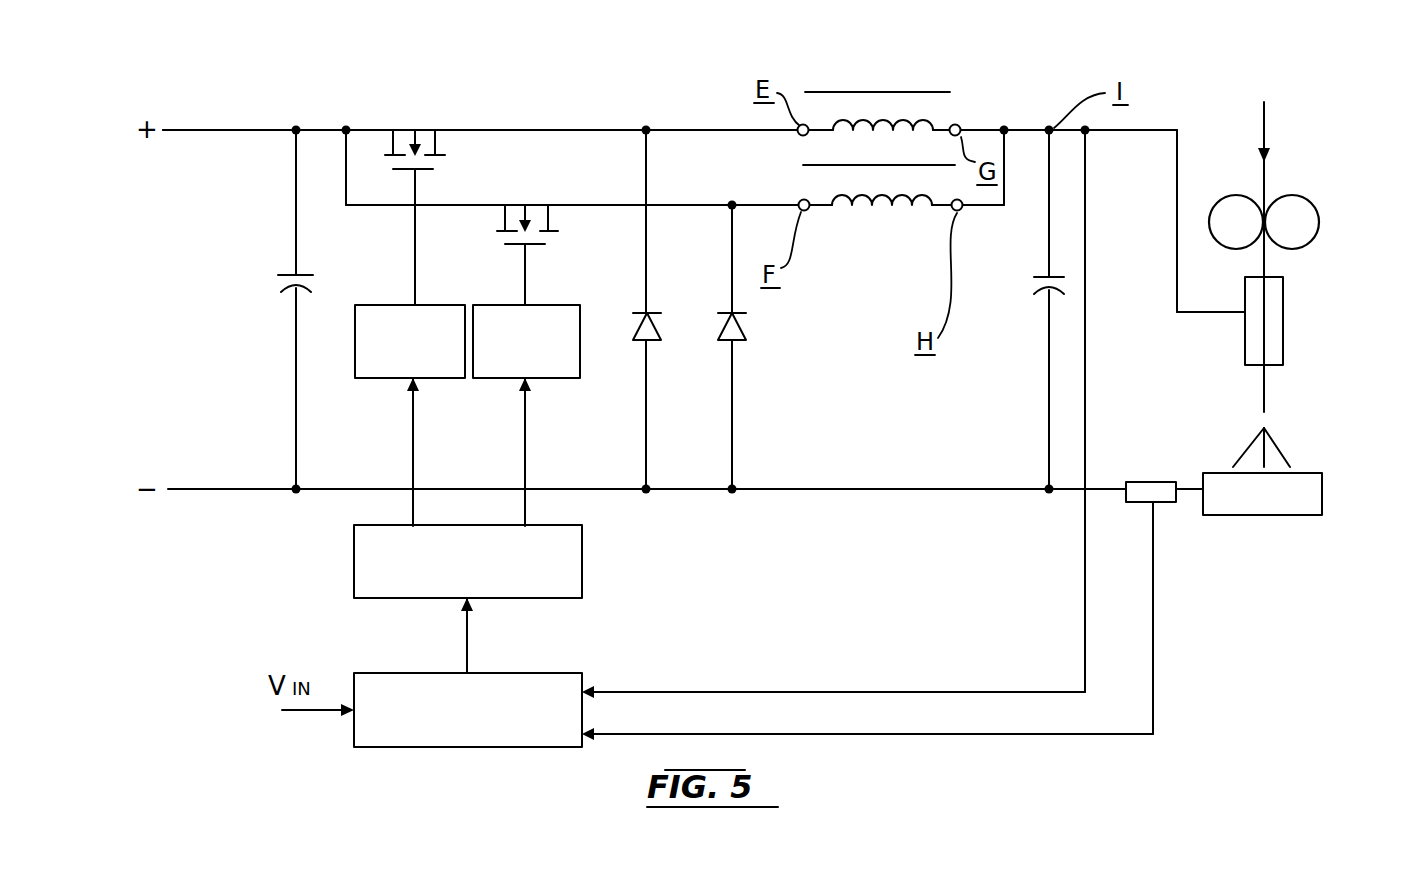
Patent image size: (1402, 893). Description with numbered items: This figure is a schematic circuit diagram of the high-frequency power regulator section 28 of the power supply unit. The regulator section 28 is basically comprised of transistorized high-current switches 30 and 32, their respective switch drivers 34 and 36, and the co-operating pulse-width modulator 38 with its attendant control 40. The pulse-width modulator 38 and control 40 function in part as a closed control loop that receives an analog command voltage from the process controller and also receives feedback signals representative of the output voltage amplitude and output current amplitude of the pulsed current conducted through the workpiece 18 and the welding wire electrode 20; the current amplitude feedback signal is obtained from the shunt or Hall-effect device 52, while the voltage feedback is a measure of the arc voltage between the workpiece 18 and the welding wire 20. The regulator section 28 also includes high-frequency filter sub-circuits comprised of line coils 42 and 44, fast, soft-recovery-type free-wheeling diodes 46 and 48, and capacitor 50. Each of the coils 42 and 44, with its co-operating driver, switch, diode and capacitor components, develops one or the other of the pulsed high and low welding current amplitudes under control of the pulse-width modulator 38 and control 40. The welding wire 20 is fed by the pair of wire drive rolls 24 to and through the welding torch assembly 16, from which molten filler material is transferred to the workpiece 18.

The high-frequency power regulator section 28 is at (545, 70).
The transistorized high-current switch 30 is at (445, 100).
The transistorized high-current switch 32 is at (540, 196).
The switch driver 34 is at (414, 317).
The switch driver 36 is at (548, 314).
The pulse-width modulator 38 is at (570, 563).
The control 40 is at (532, 680).
The line coil 42 is at (938, 113).
The line coil 44 is at (908, 218).
The free-wheeling diode 46 is at (655, 335).
The free-wheeling diode 48 is at (735, 333).
The capacitor 50 is at (1033, 282).
The shunt or Hall-effect device 52 is at (1165, 503).
The welding torch assembly 16 is at (1285, 330).
The metal workpiece 18 is at (1310, 502).
The welding wire 20 is at (1266, 178).
The wire drive rolls 24 is at (1320, 217).